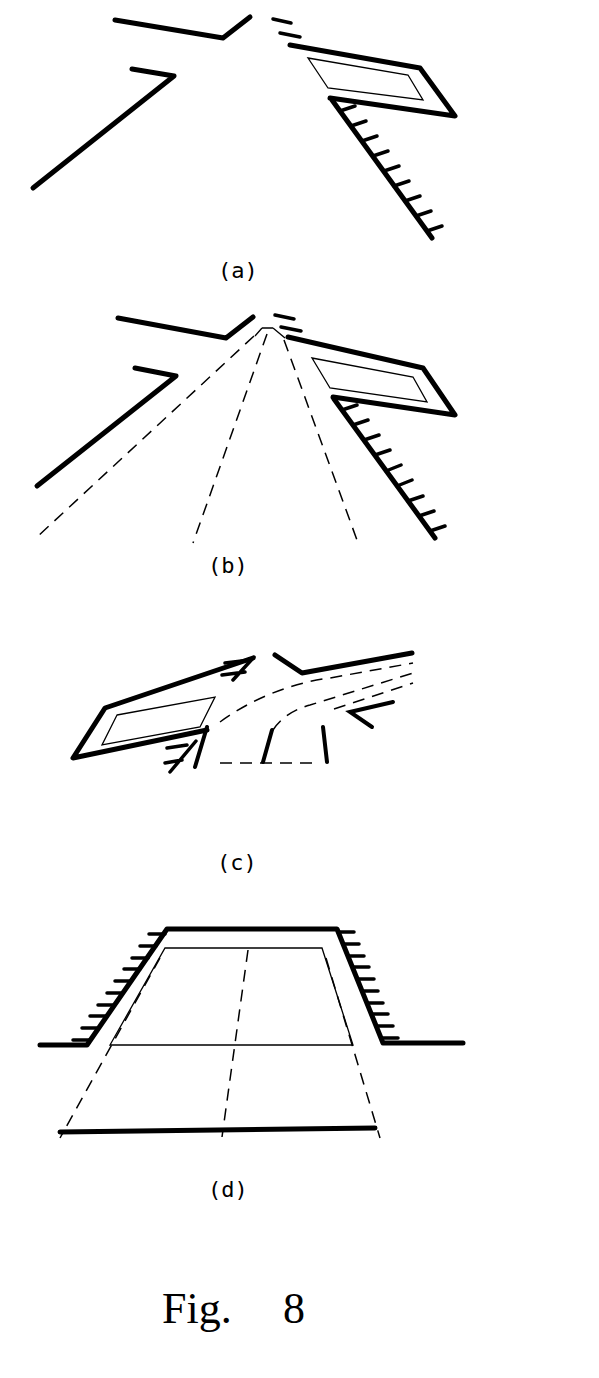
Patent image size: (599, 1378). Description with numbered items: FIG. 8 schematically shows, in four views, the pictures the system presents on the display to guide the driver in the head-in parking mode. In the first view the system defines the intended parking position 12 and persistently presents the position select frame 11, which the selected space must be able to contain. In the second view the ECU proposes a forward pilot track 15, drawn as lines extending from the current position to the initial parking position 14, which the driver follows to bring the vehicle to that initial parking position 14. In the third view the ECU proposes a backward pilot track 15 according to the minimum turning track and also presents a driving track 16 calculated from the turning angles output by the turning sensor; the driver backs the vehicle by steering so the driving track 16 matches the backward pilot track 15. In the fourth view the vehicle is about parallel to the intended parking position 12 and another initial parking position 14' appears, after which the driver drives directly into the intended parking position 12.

The position select frame 11 is at (428, 80).
The intended parking position 12 is at (395, 110).
The initial parking position 14 is at (243, 555).
The initial parking position 14' is at (217, 1147).
The pilot track 15 is at (157, 428).
The driving track 16 is at (267, 735).